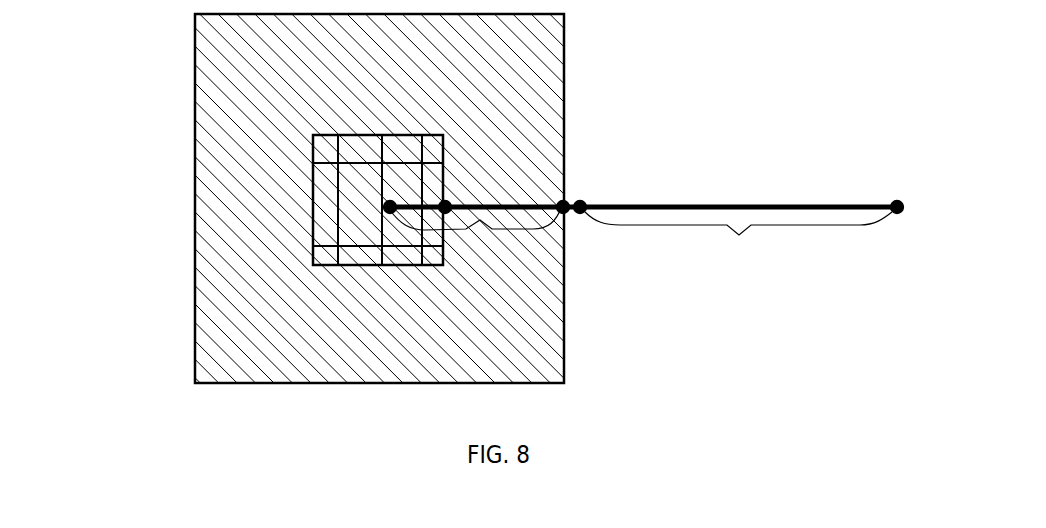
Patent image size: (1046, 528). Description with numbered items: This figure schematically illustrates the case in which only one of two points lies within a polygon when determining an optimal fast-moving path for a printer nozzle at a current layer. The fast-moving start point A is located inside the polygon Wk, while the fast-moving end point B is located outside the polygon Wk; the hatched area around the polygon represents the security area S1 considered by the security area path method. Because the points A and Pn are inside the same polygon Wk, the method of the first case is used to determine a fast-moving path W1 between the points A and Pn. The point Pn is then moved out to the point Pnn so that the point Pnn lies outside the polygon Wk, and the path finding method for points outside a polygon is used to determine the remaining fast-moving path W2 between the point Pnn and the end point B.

The search region S1 is at (237, 207).
The polygon Wk is at (193, 368).
The fast-moving start point A is at (372, 207).
The fast-moving end point B is at (920, 209).
The point Pn is at (545, 188).
The point Pnn is at (599, 188).
The fast-moving path W1 is at (476, 245).
The second path segment width W2 is at (738, 254).